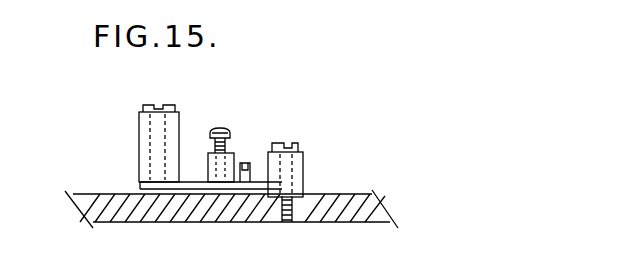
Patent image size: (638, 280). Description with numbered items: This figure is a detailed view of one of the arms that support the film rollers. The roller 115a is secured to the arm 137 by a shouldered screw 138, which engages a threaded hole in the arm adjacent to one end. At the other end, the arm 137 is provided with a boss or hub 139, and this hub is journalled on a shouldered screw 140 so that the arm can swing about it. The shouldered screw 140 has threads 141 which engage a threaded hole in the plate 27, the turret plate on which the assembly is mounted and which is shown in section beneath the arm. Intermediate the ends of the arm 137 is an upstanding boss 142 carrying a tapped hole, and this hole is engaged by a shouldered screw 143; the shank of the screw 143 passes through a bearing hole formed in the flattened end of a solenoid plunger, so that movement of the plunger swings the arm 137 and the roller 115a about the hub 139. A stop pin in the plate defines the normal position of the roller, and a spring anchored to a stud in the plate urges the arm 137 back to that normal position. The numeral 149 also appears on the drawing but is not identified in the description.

The plate 27 is at (146, 222).
The roller 115a is at (139, 147).
The arm 137 is at (192, 181).
The shouldered screw 138 is at (146, 105).
The boss or hub 139 is at (303, 170).
The shouldered screw 140 is at (290, 143).
The threads 141 is at (287, 222).
The upstanding boss 142 is at (236, 156).
The shouldered screw 143 is at (227, 133).
The post 149 is at (249, 182).